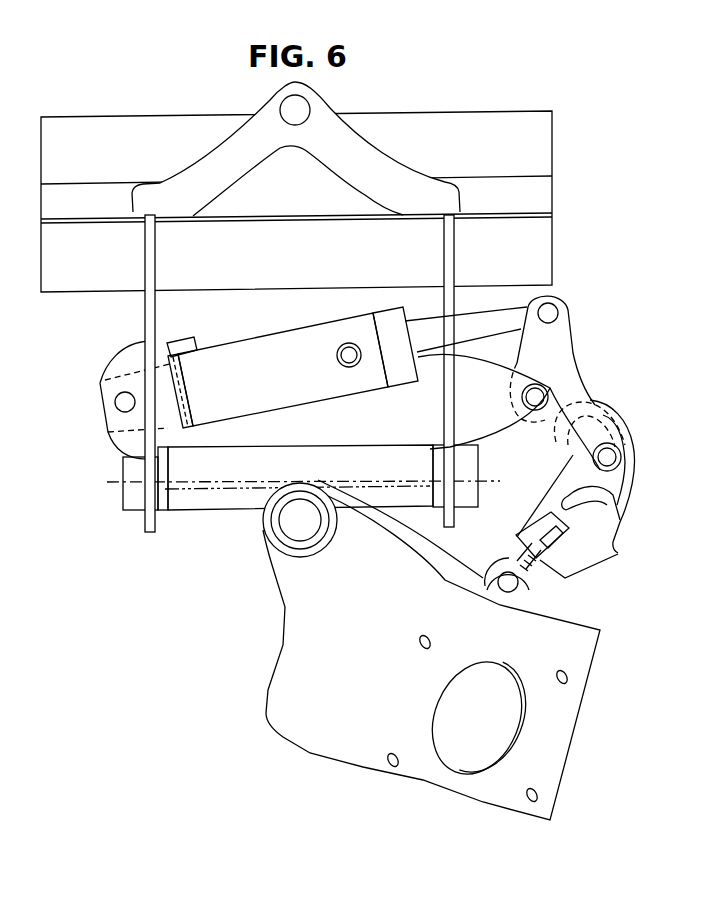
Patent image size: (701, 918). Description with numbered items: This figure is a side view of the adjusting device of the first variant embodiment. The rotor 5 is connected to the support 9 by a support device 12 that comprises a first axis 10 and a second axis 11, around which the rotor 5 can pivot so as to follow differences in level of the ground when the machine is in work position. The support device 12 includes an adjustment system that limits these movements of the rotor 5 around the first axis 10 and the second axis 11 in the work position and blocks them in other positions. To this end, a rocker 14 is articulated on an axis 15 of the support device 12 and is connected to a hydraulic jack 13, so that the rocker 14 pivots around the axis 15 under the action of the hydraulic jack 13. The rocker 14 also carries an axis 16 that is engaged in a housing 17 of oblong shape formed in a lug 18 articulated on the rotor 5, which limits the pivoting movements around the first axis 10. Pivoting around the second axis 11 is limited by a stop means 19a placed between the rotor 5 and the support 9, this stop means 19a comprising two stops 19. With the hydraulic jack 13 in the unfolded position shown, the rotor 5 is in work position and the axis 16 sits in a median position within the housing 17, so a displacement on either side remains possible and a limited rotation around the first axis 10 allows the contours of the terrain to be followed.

The rotor 5 is at (322, 717).
The support 9 is at (73, 130).
The first axis 10 is at (293, 523).
The second axis 11 is at (122, 482).
The support device 12 is at (160, 549).
The hydraulic jack 13 is at (190, 372).
The rocker 14 is at (557, 337).
The axis 15 is at (537, 397).
The axis 16 is at (608, 452).
The housing 17 is at (597, 497).
The lug 18 is at (580, 550).
The stop 19 is at (448, 520).
The stop means 19a is at (436, 540).